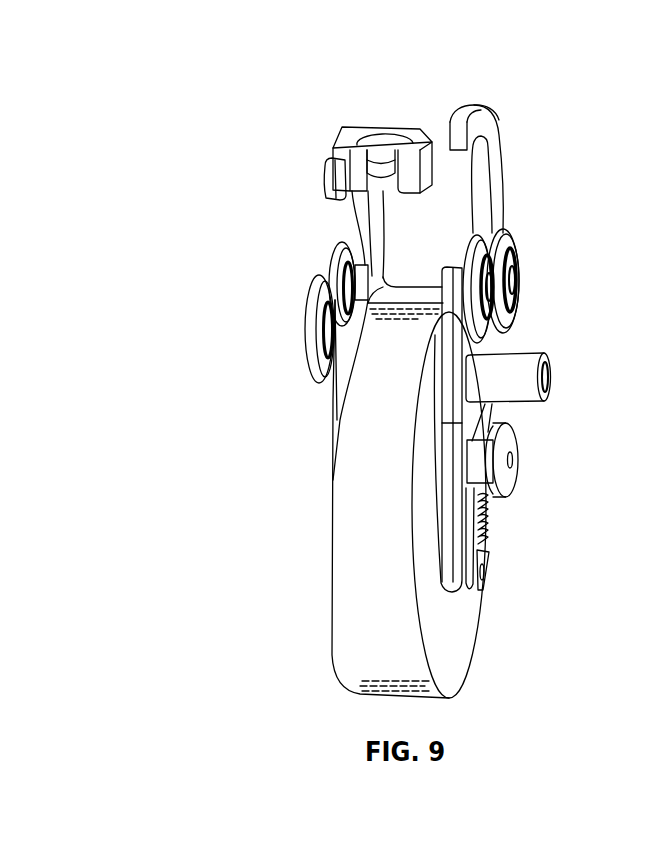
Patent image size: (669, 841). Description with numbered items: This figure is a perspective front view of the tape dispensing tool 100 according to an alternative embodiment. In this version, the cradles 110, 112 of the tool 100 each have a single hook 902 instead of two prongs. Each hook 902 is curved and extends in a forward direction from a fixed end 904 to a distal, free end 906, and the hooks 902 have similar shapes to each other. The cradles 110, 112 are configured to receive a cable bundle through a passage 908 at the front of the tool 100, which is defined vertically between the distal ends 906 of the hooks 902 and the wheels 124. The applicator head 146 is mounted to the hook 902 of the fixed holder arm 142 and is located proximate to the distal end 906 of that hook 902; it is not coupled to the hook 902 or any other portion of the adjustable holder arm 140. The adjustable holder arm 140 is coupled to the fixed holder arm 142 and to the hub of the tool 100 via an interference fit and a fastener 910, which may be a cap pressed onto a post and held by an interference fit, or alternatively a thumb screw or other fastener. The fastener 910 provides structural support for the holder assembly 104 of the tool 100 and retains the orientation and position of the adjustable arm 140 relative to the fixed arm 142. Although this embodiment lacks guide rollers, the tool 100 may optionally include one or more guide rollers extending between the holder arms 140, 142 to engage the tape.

The tape dispensing tool 100 is at (252, 169).
The holder assembly 104 is at (533, 311).
The cradle 110 is at (531, 157).
The cradle 112 is at (260, 242).
The wheel 124 is at (305, 330).
The adjustable holder arm 140 is at (477, 510).
The fixed holder arm 142 is at (333, 392).
The applicator head 146 is at (352, 131).
The hook 902 is at (330, 160).
The fixed end 904 is at (378, 270).
The distal end 906 is at (328, 200).
The passage 908 is at (342, 224).
The fastener 910 is at (512, 442).